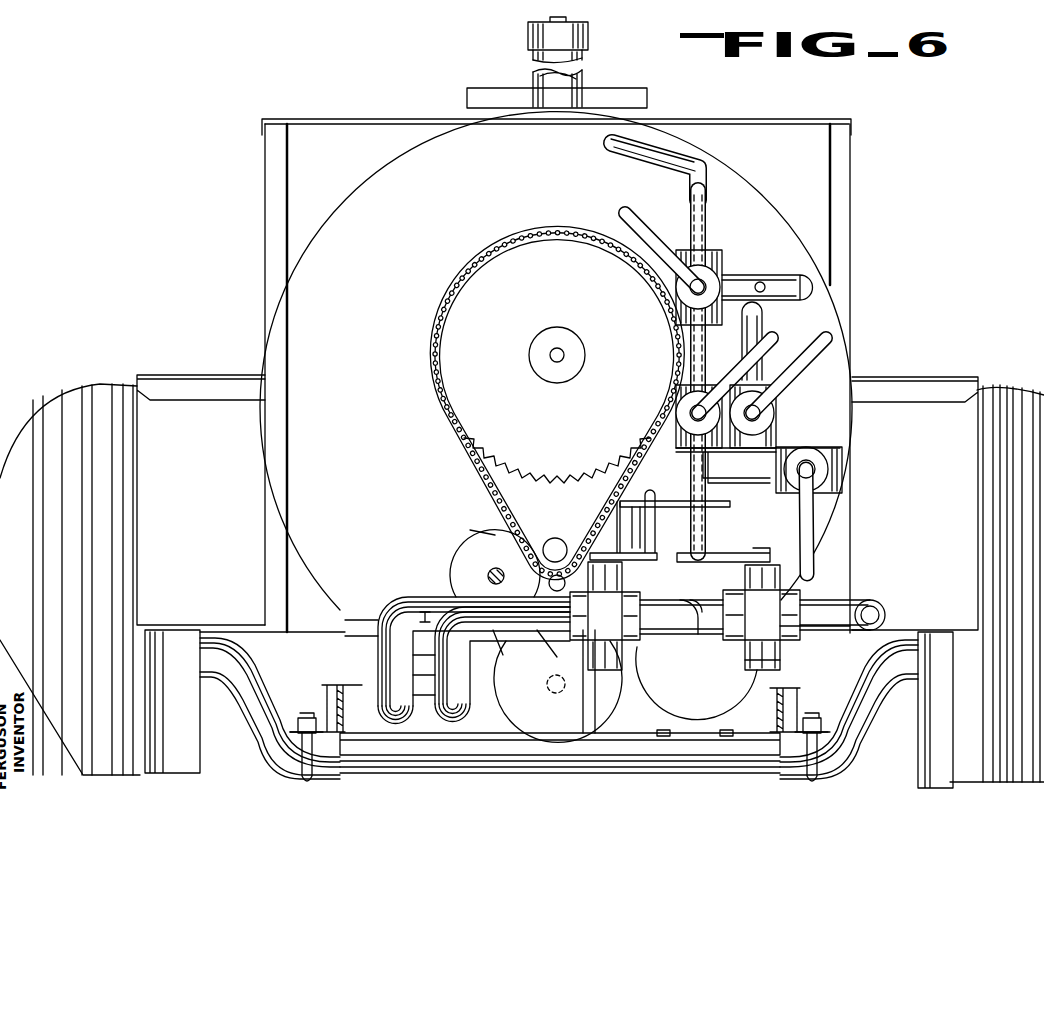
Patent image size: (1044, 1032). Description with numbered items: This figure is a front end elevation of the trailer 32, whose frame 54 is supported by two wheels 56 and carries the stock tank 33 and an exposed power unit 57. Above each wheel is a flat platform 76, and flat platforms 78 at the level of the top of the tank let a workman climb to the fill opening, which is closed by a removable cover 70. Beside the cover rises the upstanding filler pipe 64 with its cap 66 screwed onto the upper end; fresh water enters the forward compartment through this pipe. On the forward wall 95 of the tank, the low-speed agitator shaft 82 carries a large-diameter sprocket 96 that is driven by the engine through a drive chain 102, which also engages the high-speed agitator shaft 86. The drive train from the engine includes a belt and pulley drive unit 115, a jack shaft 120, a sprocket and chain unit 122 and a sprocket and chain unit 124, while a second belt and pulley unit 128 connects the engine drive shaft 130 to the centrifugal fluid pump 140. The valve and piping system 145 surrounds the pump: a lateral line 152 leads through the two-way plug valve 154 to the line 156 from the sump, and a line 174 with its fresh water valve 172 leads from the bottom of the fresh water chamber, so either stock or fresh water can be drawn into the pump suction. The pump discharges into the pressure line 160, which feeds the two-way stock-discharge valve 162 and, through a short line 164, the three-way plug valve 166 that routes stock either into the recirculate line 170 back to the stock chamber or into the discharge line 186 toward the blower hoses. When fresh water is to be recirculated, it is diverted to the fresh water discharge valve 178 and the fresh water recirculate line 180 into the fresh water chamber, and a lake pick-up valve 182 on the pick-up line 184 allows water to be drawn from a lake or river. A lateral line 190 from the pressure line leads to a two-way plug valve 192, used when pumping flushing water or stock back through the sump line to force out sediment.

The trailer 32 is at (330, 702).
The tank 33 is at (790, 245).
The frame 54 is at (790, 695).
The wheels 56 is at (80, 385).
The power unit 57 is at (492, 528).
The filler pipe 64 is at (536, 78).
The cap 66 is at (533, 34).
The cover 70 is at (468, 92).
The flat platforms 76 is at (190, 375).
The flat platforms 78 is at (332, 119).
The low-speed agitator shaft 82 is at (563, 352).
The high-speed agitator shaft 86 is at (550, 588).
The forward wall 95 is at (466, 201).
The sprocket 96 is at (575, 296).
The drive chain 102 is at (503, 490).
The belt and pulley drive unit 115 is at (548, 720).
The jack shaft 120 is at (553, 690).
The sprocket and chain unit 122 is at (578, 545).
The sprocket and chain unit 124 is at (432, 300).
The second belt and pulley unit 128 is at (456, 563).
The drive shaft 130 is at (493, 570).
The fluid pump 140 is at (722, 560).
The valve and piping system 145 is at (800, 327).
The lateral line 152 is at (640, 640).
The two-way plug valve 154 is at (643, 598).
The line 156 is at (388, 606).
The line 160 is at (690, 482).
The two-way stock-discharge valve 162 is at (676, 440).
The short line 164 is at (688, 357).
The three-way plug valve 166 is at (720, 250).
The recirculate line 170 is at (645, 153).
The fresh water valve 172 is at (660, 635).
The line 174 is at (455, 617).
The fresh water discharge valve 178 is at (778, 440).
The fresh water recirculate line 180 is at (762, 330).
The lake pick-up valve 182 is at (750, 665).
The pick-up line 184 is at (858, 604).
The discharge line 186 is at (800, 278).
The lateral line 190 is at (752, 473).
The two-way plug valve 192 is at (835, 458).